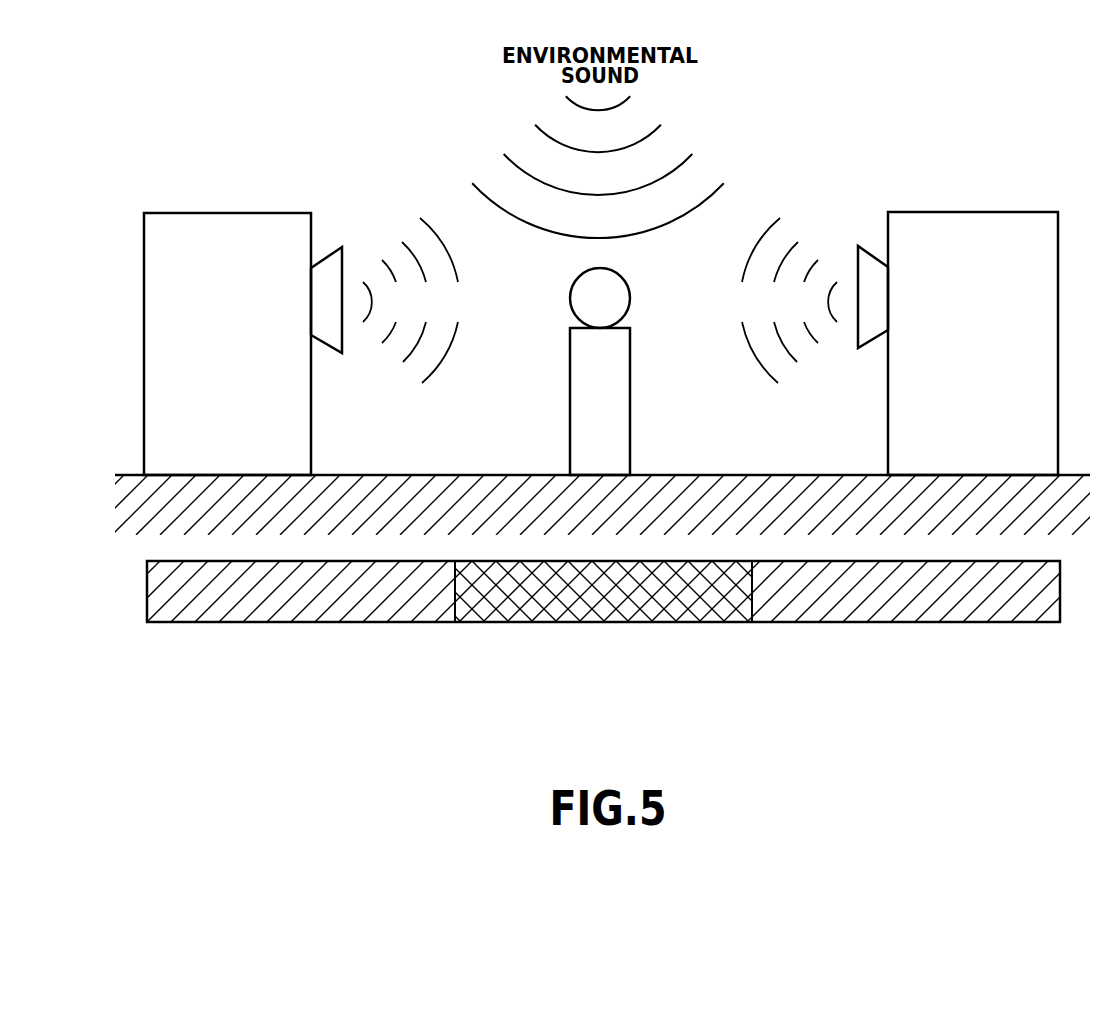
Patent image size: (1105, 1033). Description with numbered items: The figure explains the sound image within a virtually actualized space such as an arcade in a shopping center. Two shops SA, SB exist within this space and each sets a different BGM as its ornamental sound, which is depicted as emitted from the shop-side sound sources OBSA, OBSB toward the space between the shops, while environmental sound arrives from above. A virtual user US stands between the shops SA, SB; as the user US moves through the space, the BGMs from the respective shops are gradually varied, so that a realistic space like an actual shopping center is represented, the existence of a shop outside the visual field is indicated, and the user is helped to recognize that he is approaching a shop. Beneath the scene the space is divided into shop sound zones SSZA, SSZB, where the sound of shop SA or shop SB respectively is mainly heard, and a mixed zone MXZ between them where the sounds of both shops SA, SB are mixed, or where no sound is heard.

The shop SA is at (222, 222).
The shop SB is at (970, 218).
The ornamental sound output speaker of shop A OBSA is at (338, 353).
The ornamental sound output speaker of shop B OBSB is at (868, 335).
The virtual user US is at (630, 430).
The shop sound zone SSZA is at (147, 628).
The mixed zone MXZ is at (455, 628).
The shop sound zone SSZB is at (1060, 628).